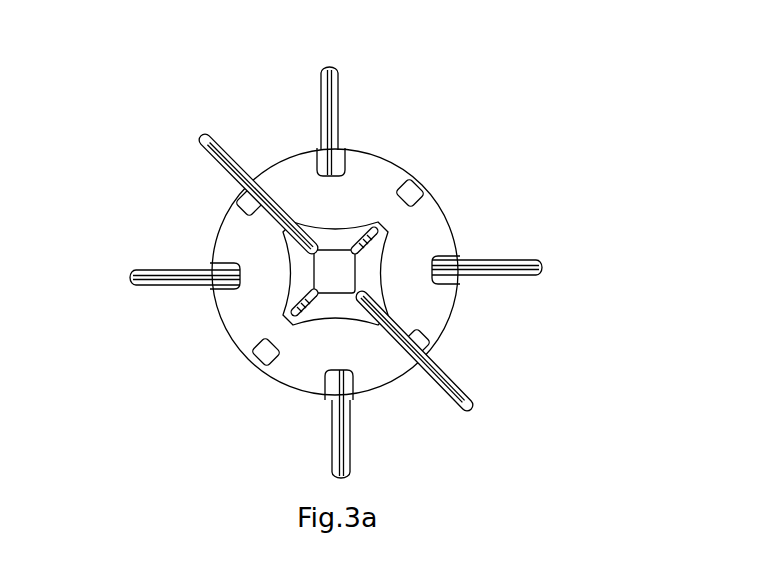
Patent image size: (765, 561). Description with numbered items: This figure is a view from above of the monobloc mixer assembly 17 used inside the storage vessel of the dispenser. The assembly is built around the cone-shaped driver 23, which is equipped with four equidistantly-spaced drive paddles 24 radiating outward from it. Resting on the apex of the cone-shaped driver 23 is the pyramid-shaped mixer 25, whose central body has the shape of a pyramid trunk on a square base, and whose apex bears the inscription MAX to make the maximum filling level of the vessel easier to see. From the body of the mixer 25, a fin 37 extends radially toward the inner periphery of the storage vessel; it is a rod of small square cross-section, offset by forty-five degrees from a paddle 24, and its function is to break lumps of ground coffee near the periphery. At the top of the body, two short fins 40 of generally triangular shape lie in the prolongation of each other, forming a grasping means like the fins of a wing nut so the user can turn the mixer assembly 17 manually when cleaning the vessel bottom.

The mixer assembly 17 is at (531, 118).
The cone-shaped driver 23 is at (297, 367).
The drive paddles 24 is at (341, 92).
The mixer 25 is at (298, 284).
The fin 37 is at (231, 158).
The short fins 40 is at (363, 242).